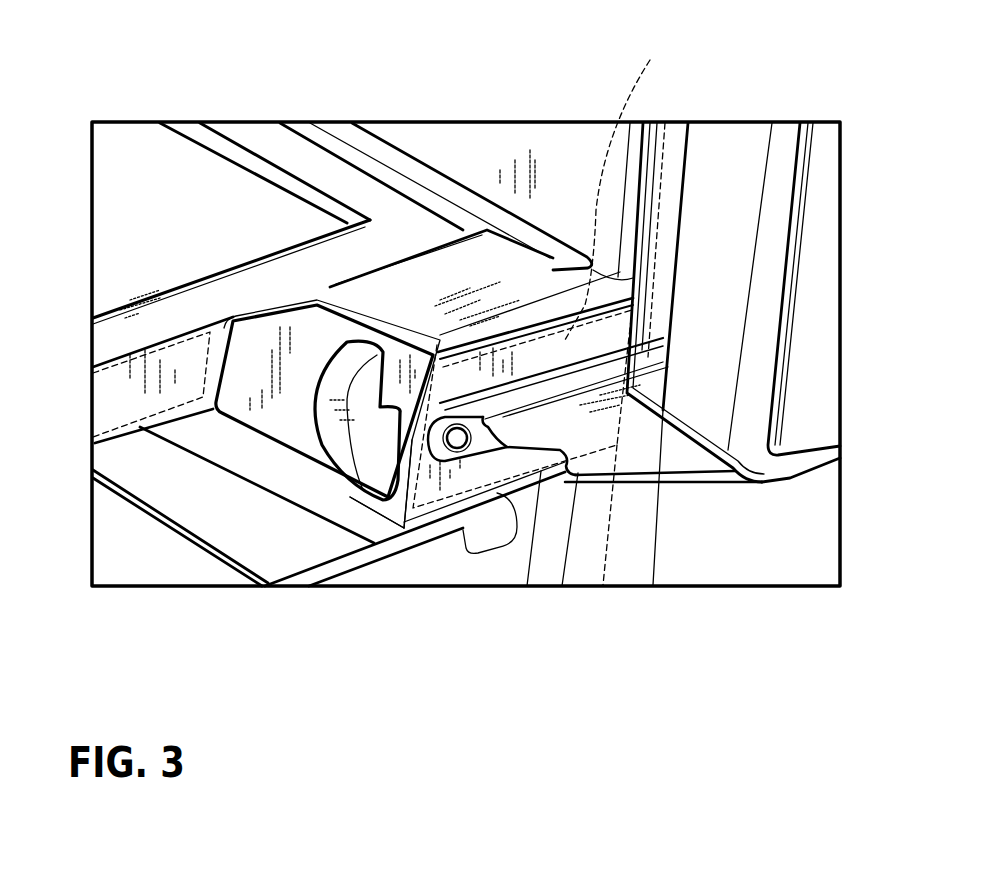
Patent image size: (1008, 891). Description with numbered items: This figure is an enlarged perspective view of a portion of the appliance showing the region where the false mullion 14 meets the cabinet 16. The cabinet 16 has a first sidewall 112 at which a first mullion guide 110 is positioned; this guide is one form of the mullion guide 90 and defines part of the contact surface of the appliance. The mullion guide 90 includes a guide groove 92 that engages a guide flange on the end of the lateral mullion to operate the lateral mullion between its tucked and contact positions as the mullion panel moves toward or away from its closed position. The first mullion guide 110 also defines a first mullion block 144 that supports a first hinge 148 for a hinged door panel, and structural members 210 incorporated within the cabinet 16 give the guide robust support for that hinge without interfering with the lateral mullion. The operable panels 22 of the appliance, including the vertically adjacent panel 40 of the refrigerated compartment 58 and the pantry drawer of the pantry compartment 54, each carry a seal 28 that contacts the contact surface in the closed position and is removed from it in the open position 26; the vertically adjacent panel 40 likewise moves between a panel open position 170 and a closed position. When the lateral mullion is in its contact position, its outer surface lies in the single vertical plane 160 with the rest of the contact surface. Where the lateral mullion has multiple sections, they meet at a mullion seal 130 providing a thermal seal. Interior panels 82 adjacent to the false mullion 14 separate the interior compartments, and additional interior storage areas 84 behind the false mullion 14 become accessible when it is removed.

The false mullion 14 is at (496, 307).
The cabinet 16 is at (385, 128).
The operable panels 22 is at (807, 443).
The open position 26 is at (833, 118).
The seal 28 is at (798, 460).
The vertically adjacent panel 40 is at (820, 207).
The pantry compartment 54 is at (345, 560).
The refrigerated compartment 58 is at (200, 195).
The interior panels 82 is at (140, 313).
The interior storage areas 84 is at (131, 388).
The mullion guide 90 is at (426, 243).
The guide groove 92 is at (347, 462).
The first mullion guide 110 is at (278, 410).
The first sidewall 112 is at (560, 173).
The mullion seal 130 is at (312, 430).
The first mullion block 144 is at (483, 496).
The first hinge 148 is at (583, 441).
The single vertical plane 160 is at (427, 490).
The panel open position 170 is at (757, 488).
The structural members 210 is at (620, 309).